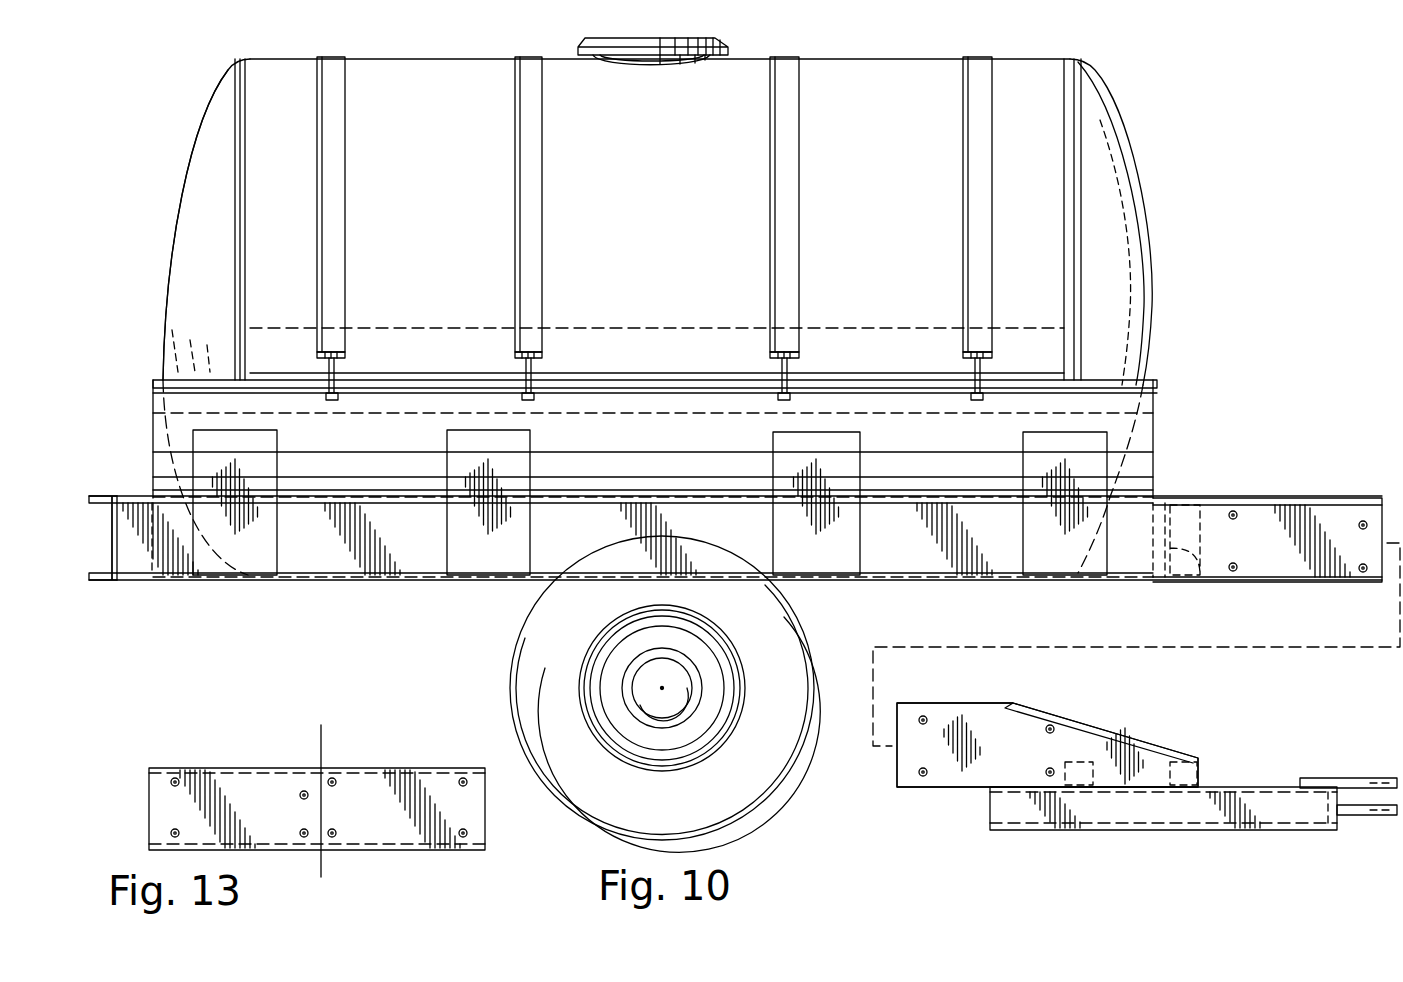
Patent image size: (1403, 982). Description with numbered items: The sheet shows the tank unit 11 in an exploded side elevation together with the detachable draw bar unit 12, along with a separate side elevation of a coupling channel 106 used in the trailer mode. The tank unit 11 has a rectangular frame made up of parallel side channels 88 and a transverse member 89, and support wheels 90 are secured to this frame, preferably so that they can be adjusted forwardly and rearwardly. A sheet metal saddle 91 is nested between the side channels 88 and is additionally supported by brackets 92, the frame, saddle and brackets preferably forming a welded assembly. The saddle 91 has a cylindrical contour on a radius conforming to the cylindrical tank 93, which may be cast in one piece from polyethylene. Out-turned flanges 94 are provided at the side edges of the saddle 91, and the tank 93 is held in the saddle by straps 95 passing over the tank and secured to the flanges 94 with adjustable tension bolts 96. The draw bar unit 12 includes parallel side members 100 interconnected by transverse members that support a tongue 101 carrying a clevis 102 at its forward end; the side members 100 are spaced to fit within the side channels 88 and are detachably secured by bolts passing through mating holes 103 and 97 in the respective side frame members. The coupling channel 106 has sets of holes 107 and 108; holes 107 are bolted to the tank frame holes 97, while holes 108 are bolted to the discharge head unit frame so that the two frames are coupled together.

In FIG. 10, the tank unit 11 is at (1133, 154).
In FIG. 10, the cylindrical tank 93 is at (200, 185).
In FIG. 10, the straps 95 is at (345, 174).
In FIG. 10, the adjustable tension bolts 96 is at (338, 380).
In FIG. 10, the out-turned flanges 94 is at (1148, 387).
In FIG. 10, the sheet metal saddle 91 is at (1143, 435).
In FIG. 10, the side channels 88 is at (410, 560).
In FIG. 10, the brackets 92 is at (480, 563).
In FIG. 10, the holes 97 is at (1237, 512).
In FIG. 10, the transverse member 89 is at (112, 546).
In FIG. 10, the support wheels 90 is at (795, 628).
In FIG. 10, the holes 103 is at (927, 717).
In FIG. 10, the side members 100 is at (1020, 727).
In FIG. 10, the draw bar unit 12 is at (1145, 731).
In FIG. 10, the tongue 101 is at (1255, 800).
In FIG. 10, the clevis 102 is at (1357, 778).
In FIG. 13, the coupling channel 106 is at (160, 770).
In FIG. 13, the holes 107 is at (298, 788).
In FIG. 13, the holes 108 is at (462, 778).